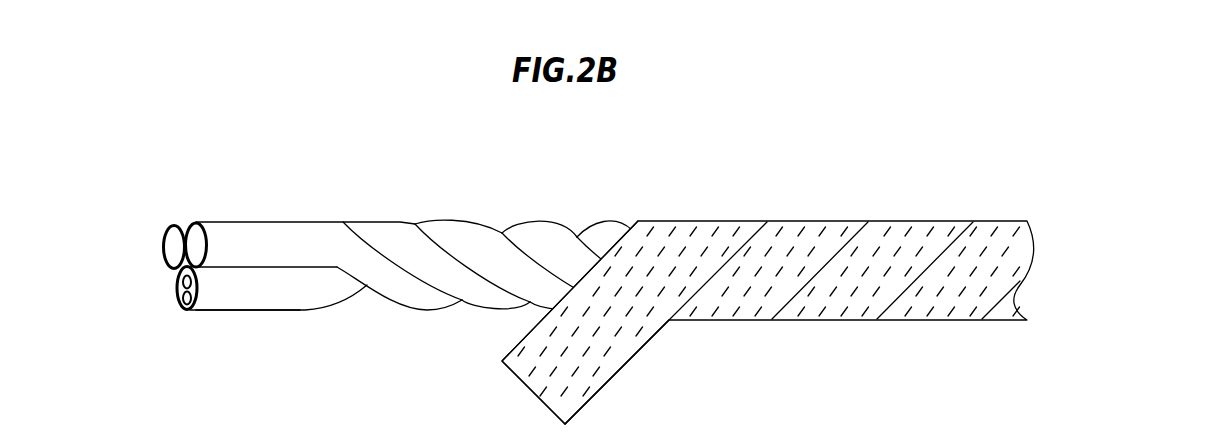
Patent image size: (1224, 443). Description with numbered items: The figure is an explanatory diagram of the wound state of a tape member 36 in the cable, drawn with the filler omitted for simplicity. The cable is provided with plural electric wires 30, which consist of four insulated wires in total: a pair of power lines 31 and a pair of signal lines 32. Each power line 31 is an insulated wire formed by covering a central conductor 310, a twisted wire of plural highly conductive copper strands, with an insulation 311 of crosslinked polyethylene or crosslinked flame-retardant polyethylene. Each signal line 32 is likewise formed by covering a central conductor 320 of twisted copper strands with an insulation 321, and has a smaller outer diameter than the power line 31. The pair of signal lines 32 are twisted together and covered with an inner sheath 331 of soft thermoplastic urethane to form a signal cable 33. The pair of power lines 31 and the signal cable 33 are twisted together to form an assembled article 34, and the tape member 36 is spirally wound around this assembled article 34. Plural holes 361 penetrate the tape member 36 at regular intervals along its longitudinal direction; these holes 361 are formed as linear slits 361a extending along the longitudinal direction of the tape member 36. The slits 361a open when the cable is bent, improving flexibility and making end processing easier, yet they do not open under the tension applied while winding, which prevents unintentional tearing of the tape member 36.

The electric wires 30 is at (422, 317).
The power line 31 is at (246, 228).
The central conductor 310 is at (168, 227).
The insulation 311 is at (182, 223).
The signal line 32 is at (210, 354).
The central conductor 320 is at (177, 298).
The insulation 321 is at (185, 310).
The signal cable 33 is at (287, 313).
The inner sheath 331 is at (242, 302).
The assembled article 34 is at (342, 213).
The tape member 36 is at (789, 221).
The holes 361 is at (740, 313).
The slits 361a is at (600, 370).